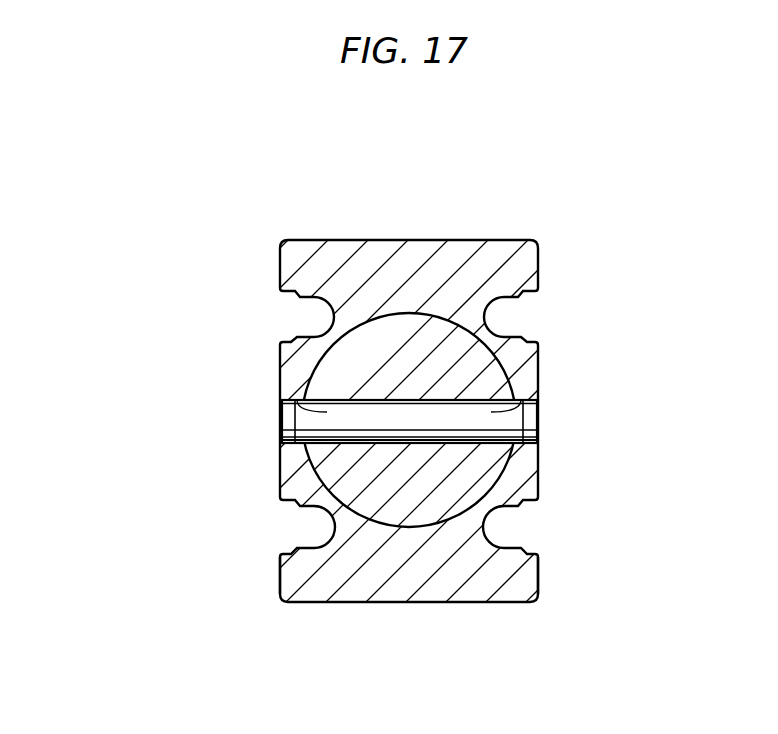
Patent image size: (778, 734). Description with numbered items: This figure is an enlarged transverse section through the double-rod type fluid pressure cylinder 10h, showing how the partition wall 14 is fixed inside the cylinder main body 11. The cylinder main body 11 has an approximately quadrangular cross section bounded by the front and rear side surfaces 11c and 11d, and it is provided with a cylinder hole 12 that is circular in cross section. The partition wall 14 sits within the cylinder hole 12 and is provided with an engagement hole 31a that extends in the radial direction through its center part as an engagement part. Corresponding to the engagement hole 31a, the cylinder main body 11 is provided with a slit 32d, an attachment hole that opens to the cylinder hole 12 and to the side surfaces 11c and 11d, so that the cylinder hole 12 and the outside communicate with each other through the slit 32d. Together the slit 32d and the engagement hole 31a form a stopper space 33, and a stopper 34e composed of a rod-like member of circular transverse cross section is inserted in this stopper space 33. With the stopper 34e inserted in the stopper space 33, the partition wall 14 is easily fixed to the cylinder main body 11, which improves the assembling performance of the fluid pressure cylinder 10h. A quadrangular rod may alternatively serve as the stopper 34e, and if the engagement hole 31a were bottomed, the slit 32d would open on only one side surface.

The fluid pressure cylinder 10h is at (552, 226).
The cylinder main body 11 is at (352, 603).
The front side surface 11c is at (539, 580).
The rear side surface 11d is at (281, 579).
The cylinder hole 12 is at (472, 493).
The partition wall 14 is at (403, 480).
The engagement hole 31a is at (538, 401).
The slit 32d is at (282, 440).
The stopper space 33 is at (283, 402).
The stopper 34e is at (388, 422).